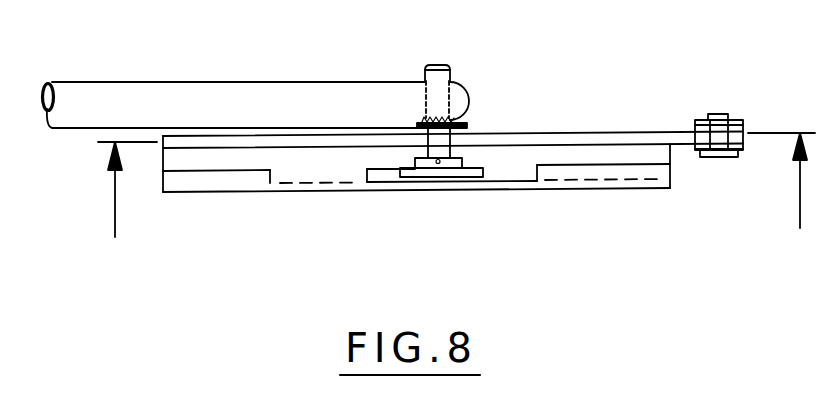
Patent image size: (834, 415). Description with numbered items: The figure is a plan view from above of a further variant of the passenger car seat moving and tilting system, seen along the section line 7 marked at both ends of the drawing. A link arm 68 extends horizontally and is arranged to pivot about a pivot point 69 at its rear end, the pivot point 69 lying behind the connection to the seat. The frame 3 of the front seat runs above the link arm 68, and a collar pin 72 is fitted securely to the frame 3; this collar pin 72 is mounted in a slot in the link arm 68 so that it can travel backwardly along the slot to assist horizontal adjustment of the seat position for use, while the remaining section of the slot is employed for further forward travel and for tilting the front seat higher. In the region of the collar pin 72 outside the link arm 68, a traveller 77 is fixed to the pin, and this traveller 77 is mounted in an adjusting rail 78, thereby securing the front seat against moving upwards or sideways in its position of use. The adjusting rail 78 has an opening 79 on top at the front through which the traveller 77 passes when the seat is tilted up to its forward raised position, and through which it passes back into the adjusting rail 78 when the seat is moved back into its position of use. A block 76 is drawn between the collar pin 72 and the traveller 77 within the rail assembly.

The frame 3 is at (118, 103).
The collar pin 72 is at (433, 64).
The link arm 68 is at (532, 140).
The pivot point 69 is at (718, 115).
The opening 79 is at (233, 177).
The mounting block 76 is at (423, 168).
The traveller 77 is at (477, 177).
The adjusting rail 78 is at (623, 172).
The section line 7-7 view indicator 7 is at (457, 212).